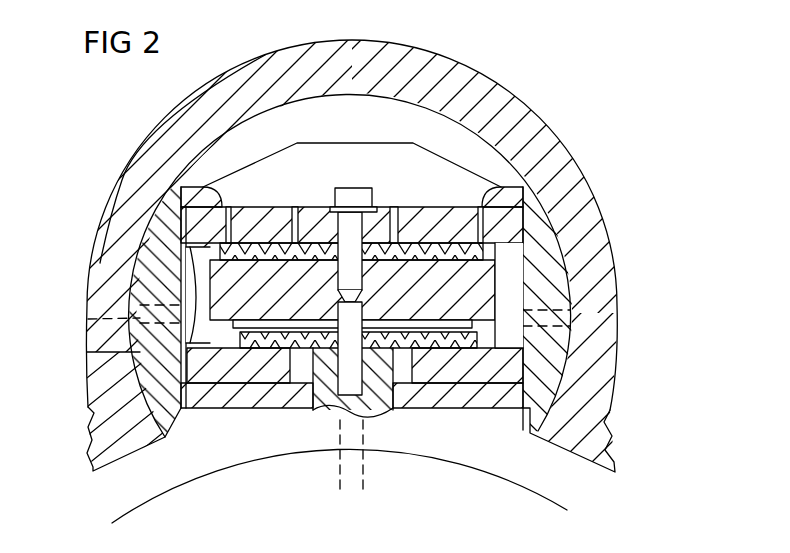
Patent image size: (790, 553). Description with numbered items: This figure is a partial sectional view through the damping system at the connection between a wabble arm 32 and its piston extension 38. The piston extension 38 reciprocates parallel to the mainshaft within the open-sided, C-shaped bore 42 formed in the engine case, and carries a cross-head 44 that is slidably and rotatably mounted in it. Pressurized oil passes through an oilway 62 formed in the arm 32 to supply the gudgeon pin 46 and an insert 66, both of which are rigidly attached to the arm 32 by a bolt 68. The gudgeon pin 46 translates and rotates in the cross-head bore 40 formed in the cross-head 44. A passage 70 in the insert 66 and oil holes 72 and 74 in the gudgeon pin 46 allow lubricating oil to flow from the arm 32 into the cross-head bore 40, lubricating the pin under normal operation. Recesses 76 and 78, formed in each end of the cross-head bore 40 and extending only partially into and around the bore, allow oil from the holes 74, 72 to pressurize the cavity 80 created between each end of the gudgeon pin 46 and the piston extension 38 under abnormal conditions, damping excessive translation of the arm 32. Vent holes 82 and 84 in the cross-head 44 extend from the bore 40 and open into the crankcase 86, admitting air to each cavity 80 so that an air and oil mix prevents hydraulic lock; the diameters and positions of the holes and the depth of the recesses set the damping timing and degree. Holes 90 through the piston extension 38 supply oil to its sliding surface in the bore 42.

The arm 32 is at (384, 440).
The piston extension 38 is at (545, 247).
The cross-head bore 40 is at (505, 274).
The C-shaped bore 42 is at (476, 141).
The cross-head 44 is at (251, 373).
The gudgeon pin 46 is at (297, 252).
The oilway 62 is at (350, 403).
The insert 66 is at (258, 260).
The bolt 68 is at (357, 200).
The passage 70 is at (303, 325).
The oil hole 72 is at (224, 382).
The oil hole 74 is at (466, 352).
The recess 76 is at (497, 353).
The recess 78 is at (182, 350).
The cavity 80 is at (187, 287).
The vent hole 82 is at (478, 207).
The vent hole 84 is at (230, 207).
The crankcase 86 is at (263, 133).
The oil supply holes 90 is at (88, 320).